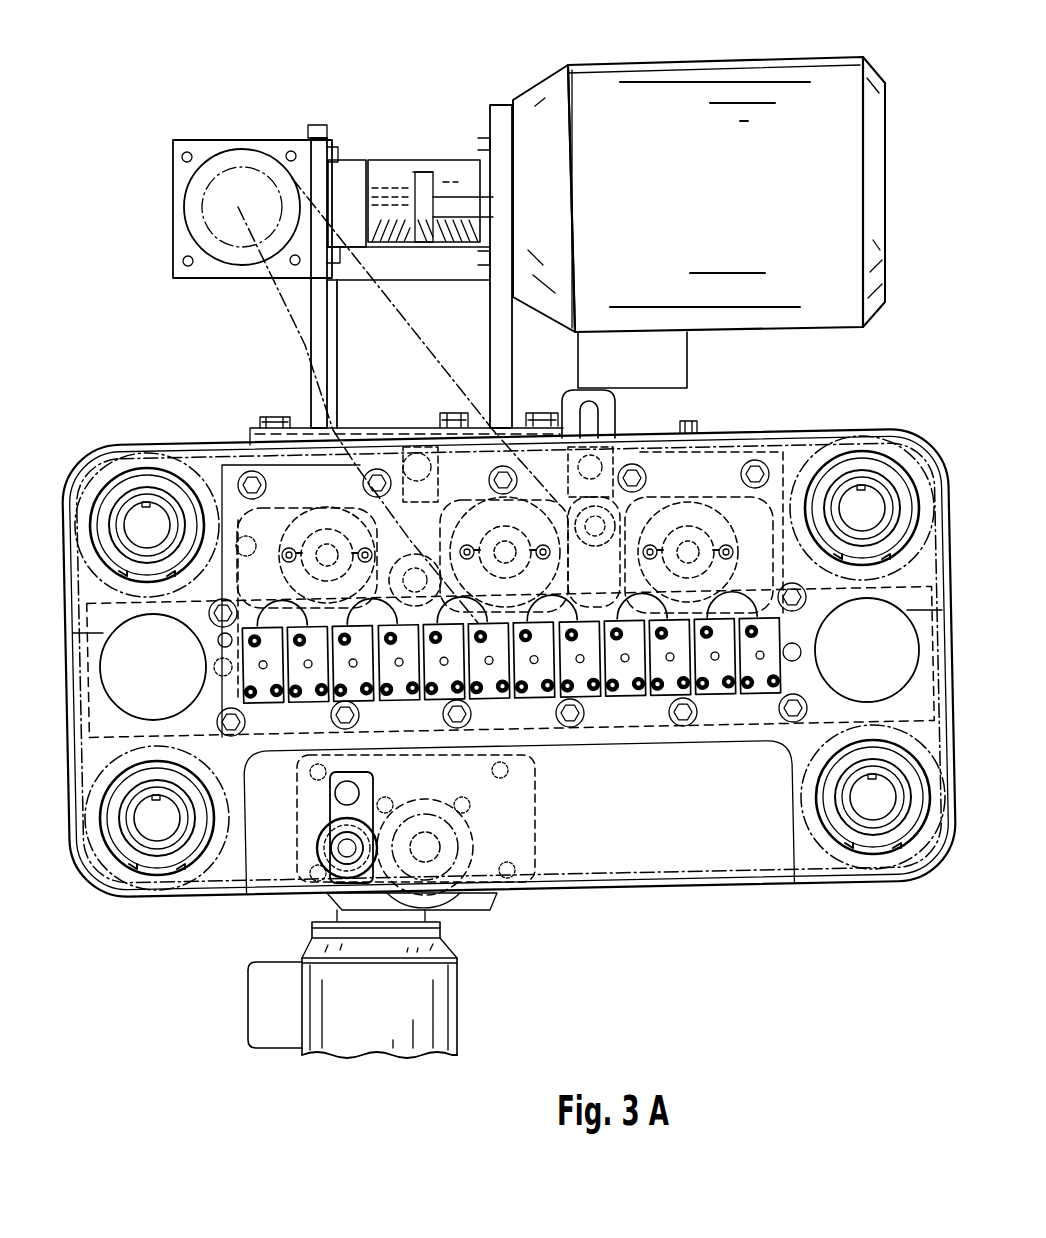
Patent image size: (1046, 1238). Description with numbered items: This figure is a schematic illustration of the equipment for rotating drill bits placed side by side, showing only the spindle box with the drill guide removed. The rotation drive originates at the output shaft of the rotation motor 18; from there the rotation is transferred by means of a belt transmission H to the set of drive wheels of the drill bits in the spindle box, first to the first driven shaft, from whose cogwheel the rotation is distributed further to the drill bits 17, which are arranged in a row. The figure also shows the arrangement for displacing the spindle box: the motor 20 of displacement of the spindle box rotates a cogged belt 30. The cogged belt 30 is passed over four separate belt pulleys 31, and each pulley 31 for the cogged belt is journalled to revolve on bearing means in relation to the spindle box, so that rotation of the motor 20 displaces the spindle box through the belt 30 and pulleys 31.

The drill bits 17 is at (305, 665).
The rotation motor 18 is at (610, 64).
The motor of displacement 20 is at (440, 1010).
The cogged belt 30 is at (687, 890).
The belt pulleys 31 is at (143, 502).
The belt transmission H is at (452, 382).